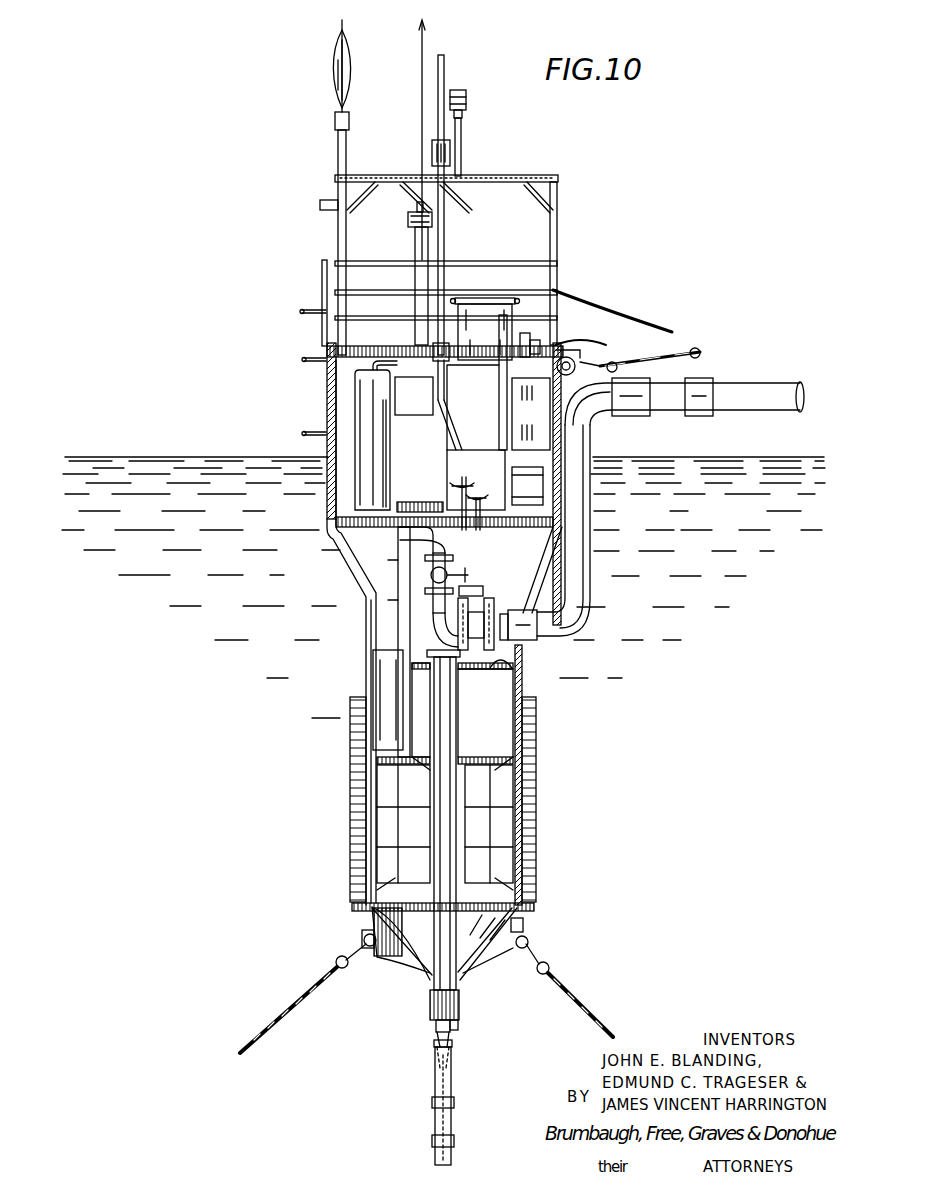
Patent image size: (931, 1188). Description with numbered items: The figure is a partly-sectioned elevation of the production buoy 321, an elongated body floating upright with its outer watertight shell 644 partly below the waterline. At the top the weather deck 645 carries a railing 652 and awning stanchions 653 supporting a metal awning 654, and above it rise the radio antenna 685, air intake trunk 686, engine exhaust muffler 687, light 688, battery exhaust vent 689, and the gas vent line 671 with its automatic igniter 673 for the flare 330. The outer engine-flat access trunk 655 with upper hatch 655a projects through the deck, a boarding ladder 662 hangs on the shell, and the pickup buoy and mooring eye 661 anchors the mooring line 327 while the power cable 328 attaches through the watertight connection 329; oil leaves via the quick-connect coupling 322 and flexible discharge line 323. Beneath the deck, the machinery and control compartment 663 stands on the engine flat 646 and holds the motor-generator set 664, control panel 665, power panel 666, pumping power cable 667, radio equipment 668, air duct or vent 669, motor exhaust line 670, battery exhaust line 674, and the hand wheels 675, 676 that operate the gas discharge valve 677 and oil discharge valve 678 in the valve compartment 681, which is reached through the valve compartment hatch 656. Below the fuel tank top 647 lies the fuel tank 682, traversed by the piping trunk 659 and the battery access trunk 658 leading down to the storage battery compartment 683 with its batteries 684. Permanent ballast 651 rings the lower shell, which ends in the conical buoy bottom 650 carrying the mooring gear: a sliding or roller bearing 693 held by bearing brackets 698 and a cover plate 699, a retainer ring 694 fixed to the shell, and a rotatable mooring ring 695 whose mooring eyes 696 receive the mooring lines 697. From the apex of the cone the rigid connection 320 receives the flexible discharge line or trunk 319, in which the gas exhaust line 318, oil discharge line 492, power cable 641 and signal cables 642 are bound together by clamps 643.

The flare 330 is at (334, 64).
The automatic igniter 673 is at (334, 122).
The battery exhaust vent 689 is at (320, 208).
The radio antenna 685 is at (420, 120).
The engine exhaust muffler 687 is at (432, 152).
The light 688 is at (466, 100).
The air intake trunk 686 is at (414, 243).
The metal awning 654 is at (515, 177).
The awning stanchions 653 is at (557, 240).
The railing 652 is at (507, 266).
The weather deck 645 is at (408, 350).
The outer watertight shell 644 is at (326, 510).
The gas vent line 671 is at (332, 380).
The boarding ladder 662 is at (310, 313).
The battery exhaust line 674 is at (356, 570).
The valve compartment 681 is at (526, 556).
The upper hatch 655a is at (482, 298).
The outer engine-flat access trunk 655 is at (500, 338).
The air duct or vent 669 is at (376, 435).
The power panel 666 is at (386, 450).
The radio transmitting and receiving equipment 668 is at (428, 412).
The pumping power cable 667 is at (446, 368).
The motor exhaust line 670 is at (446, 444).
The machinery and control compartment 663 is at (494, 416).
The motor-generator set 664 is at (489, 448).
The panel 665 is at (546, 425).
The hand wheel 675 is at (463, 470).
The hand wheel 676 is at (481, 508).
The engine flat 646 is at (404, 512).
The pickup buoy and mooring eye 661 is at (578, 362).
The power cable 328 is at (660, 342).
The watertight connection 329 is at (566, 343).
The mooring line 327 is at (700, 352).
The flexible discharge line 323 is at (765, 385).
The quick-connect coupling 322 is at (520, 645).
The production buoy 321 is at (630, 530).
The valve compartment hatch 656 is at (411, 527).
The gas discharge valve 677 is at (455, 584).
The oil discharge valve 678 is at (486, 640).
The battery access trunk 658 is at (408, 690).
The fuel tank top 647 is at (510, 668).
The permanent ballast 651 is at (534, 862).
The fuel tank 682 is at (502, 702).
The piping trunk 659 is at (452, 740).
The batteries 684 is at (505, 790).
The storage battery compartment 683 is at (510, 808).
The conical buoy bottom 650 is at (498, 952).
The cover plate 699 is at (420, 965).
The mooring eyes 696 is at (365, 934).
The mooring lines 697 is at (308, 983).
The retainer ring 694 is at (523, 927).
The mooring ring 695 is at (529, 944).
The sliding or roller bearing 693 is at (531, 975).
The bearing brackets 698 is at (490, 970).
The rigid connection 320 is at (430, 1003).
The oil discharge line 492 is at (457, 1022).
The gas exhaust line 318 is at (437, 1033).
The power cable 641 is at (437, 1040).
The signal cables 642 is at (452, 1042).
The flexible discharge line or trunk 319 is at (436, 1120).
The clamps 643 is at (454, 1142).